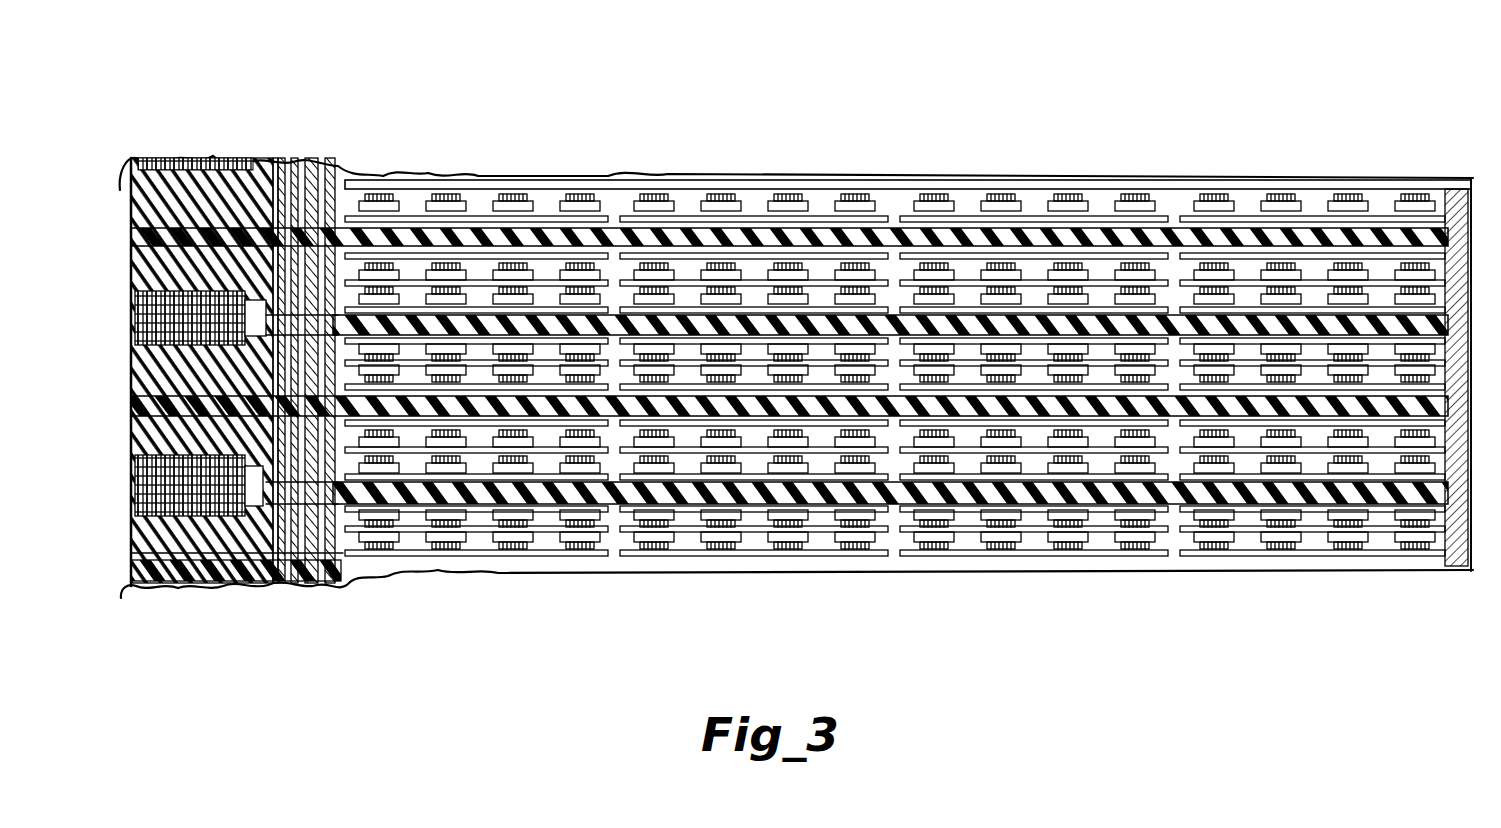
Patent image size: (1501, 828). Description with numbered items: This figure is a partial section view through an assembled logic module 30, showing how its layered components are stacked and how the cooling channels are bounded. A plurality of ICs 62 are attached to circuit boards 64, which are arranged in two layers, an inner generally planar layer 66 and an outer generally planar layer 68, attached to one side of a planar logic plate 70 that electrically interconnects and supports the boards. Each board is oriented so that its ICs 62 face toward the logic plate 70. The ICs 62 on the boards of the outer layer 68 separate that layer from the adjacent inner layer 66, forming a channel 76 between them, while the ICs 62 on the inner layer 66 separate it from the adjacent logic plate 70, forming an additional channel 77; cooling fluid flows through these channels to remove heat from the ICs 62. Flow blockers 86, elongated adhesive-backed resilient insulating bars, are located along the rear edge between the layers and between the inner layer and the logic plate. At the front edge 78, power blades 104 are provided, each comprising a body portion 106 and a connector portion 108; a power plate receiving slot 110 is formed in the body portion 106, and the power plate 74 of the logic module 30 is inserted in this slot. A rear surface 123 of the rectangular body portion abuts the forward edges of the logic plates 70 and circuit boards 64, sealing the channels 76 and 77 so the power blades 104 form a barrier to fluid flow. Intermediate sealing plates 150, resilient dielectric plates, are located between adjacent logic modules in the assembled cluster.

The logic module 30 is at (1465, 160).
The ICs 62 is at (710, 507).
The circuit boards 64 is at (545, 273).
The inner generally planar layer 66 is at (1310, 265).
The outer generally planar layer 68 is at (1242, 240).
The logic plate 70 is at (1150, 288).
The power plate 74 is at (1025, 318).
The channel 76 is at (935, 278).
The additional channel 77 is at (815, 290).
The front edge 78 is at (118, 408).
The flow blockers 86 is at (1445, 295).
The power blades 104 is at (113, 180).
The body portion 106 is at (262, 560).
The connector portion 108 is at (189, 556).
The power plate receiving slot 110 is at (335, 565).
The rear surface 123 is at (345, 330).
The intermediate sealing plates 150 is at (965, 402).